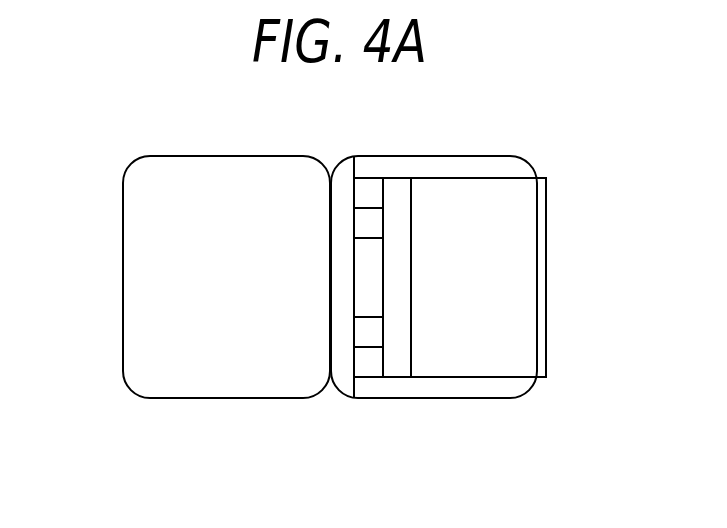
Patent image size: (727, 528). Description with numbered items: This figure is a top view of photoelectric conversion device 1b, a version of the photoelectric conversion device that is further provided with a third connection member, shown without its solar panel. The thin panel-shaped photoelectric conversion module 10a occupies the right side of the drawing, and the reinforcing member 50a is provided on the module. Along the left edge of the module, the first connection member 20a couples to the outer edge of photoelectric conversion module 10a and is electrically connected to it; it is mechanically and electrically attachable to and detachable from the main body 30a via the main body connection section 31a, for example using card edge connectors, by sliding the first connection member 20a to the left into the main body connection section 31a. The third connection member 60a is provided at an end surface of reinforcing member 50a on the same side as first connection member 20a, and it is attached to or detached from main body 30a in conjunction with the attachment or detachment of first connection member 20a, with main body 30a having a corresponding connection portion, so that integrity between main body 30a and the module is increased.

The photoelectric conversion device 1b is at (110, 172).
The photoelectric conversion module 10a is at (532, 229).
The first connection member 20a is at (367, 257).
The main body 30a is at (143, 303).
The main body connection section 31a is at (353, 293).
The reinforcing member 50a is at (400, 283).
The third connection member 60a is at (371, 186).